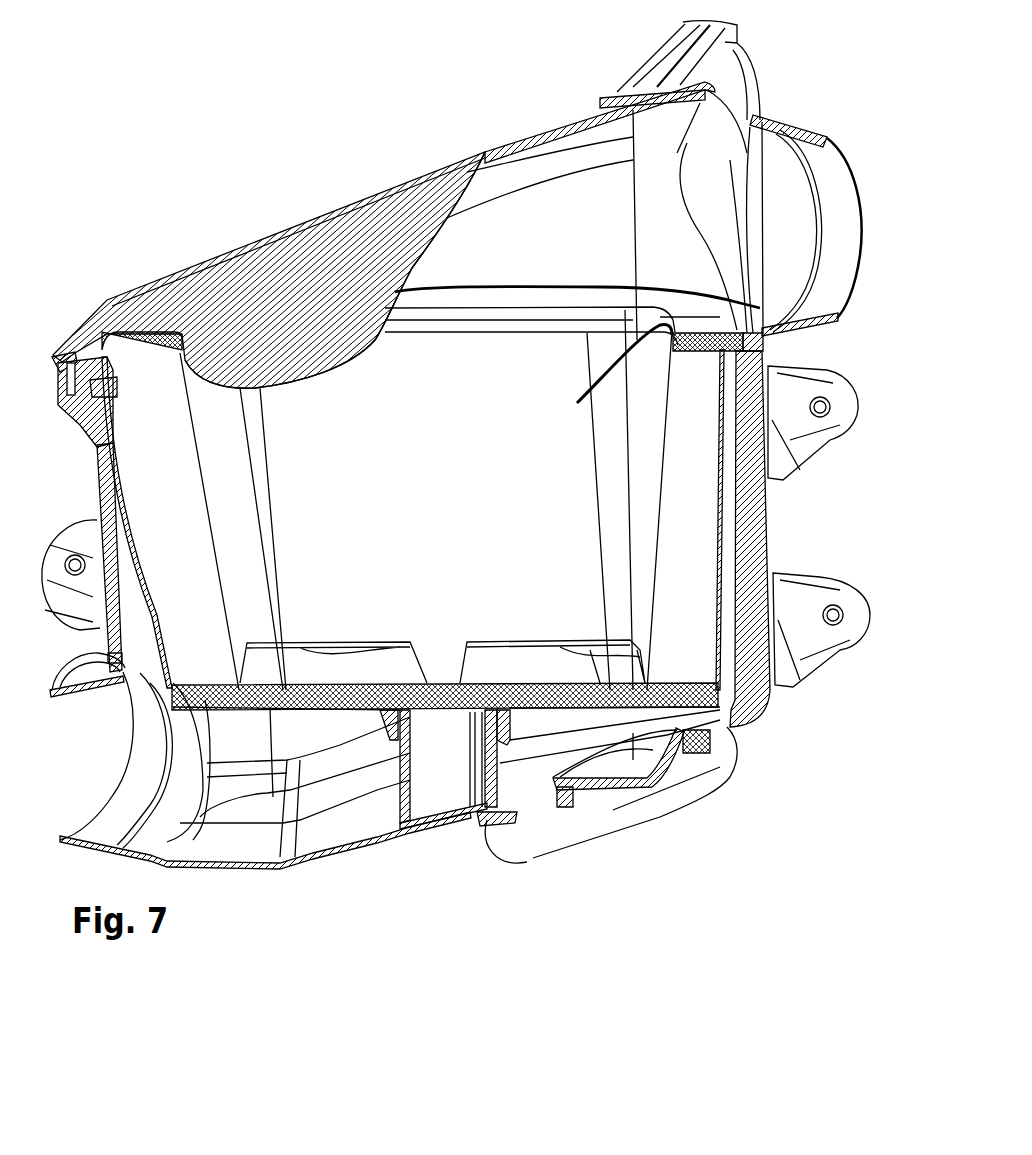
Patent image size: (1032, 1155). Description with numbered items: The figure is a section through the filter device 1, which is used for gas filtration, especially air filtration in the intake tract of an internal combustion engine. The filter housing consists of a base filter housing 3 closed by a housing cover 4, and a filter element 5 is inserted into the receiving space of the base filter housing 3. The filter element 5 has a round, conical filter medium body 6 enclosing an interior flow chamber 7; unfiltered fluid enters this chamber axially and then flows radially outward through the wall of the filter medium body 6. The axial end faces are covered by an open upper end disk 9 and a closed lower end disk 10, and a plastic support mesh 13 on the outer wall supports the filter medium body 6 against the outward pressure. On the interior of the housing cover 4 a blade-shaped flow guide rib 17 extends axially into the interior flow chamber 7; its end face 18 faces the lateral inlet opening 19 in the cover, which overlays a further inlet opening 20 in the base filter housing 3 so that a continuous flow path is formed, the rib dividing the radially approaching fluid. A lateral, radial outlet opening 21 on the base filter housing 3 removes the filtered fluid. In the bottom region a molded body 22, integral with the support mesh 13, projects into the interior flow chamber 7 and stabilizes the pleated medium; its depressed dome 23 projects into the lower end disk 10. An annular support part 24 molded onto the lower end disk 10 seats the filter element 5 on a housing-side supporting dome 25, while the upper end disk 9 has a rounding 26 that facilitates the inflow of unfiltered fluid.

The filter device 1 is at (178, 190).
The base filter housing 3 is at (95, 493).
The housing cover 4 is at (527, 121).
The filter element 5 is at (657, 530).
The filter medium body 6 is at (698, 532).
The interior flow chamber 7 is at (518, 358).
The end disk 9 is at (693, 317).
The end disk 10 is at (350, 700).
The support mesh 13 is at (158, 617).
The flow guide rib 17 is at (327, 347).
The end face 18 is at (420, 260).
The inlet opening 19 is at (710, 93).
The inlet opening 20 is at (850, 167).
The outlet opening 21 is at (73, 693).
The molded body 22 is at (340, 635).
The depressed dome 23 is at (443, 700).
The annular support part 24 is at (388, 740).
The supporting dome 25 is at (493, 773).
The rounding 26 is at (602, 379).